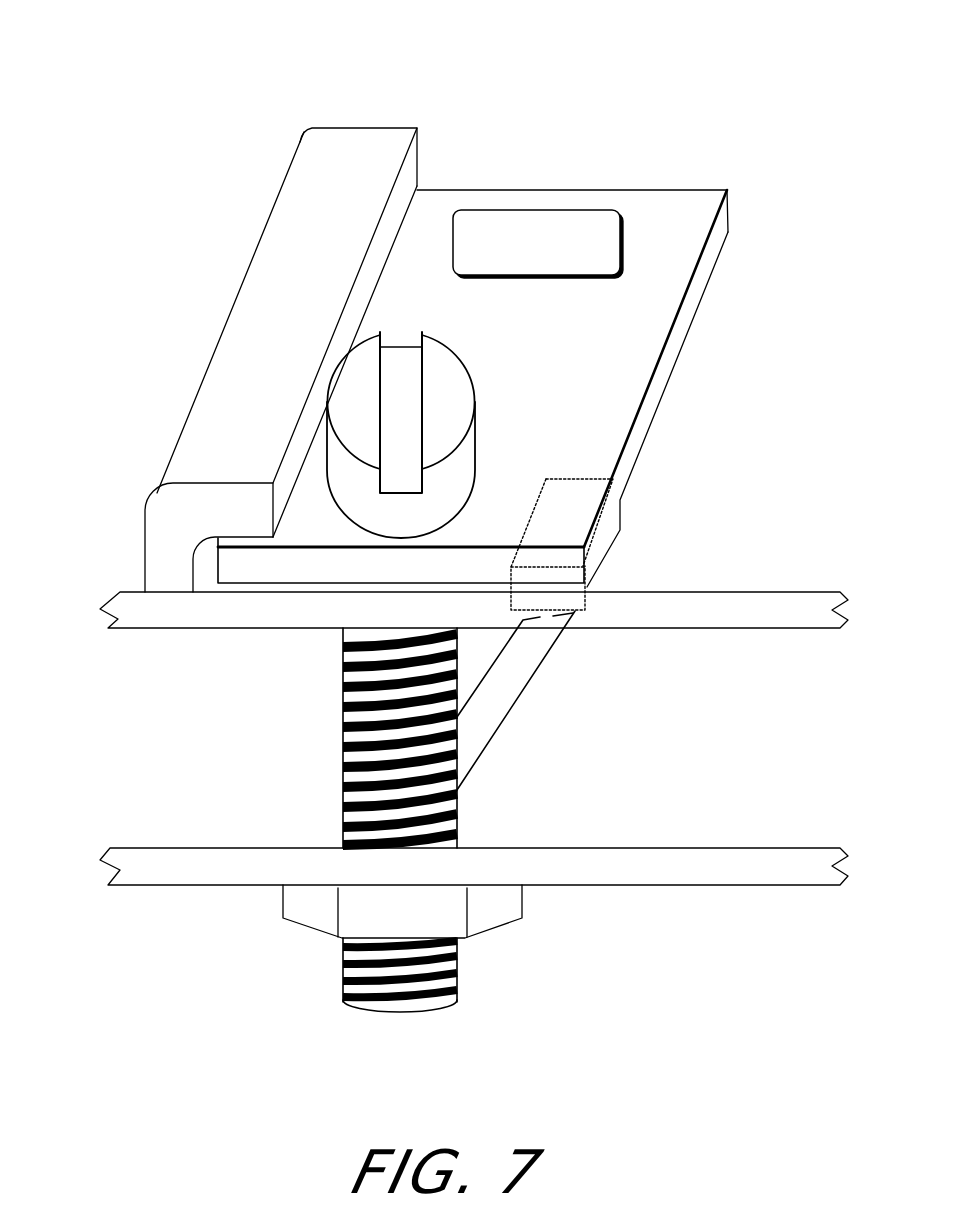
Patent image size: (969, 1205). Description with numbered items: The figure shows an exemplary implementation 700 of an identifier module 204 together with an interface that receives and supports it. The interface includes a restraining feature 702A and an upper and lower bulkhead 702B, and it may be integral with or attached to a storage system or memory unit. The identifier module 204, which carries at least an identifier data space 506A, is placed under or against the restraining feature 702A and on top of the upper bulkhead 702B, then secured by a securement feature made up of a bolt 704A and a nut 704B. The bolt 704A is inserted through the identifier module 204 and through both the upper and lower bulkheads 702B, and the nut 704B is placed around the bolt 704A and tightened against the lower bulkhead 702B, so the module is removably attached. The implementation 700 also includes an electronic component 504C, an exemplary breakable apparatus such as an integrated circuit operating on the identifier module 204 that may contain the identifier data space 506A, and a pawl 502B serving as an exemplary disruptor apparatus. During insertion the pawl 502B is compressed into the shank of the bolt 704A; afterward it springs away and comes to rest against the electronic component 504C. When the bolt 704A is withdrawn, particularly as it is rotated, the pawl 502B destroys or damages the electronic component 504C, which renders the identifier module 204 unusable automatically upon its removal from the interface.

The implementation 700 is at (214, 58).
The restraining feature 702A is at (290, 228).
The bolt 704A is at (355, 393).
The identifier data space 506A is at (465, 228).
The identifier module 204 is at (692, 212).
The electronic component 504C is at (613, 533).
The pawl 502B is at (530, 678).
The upper and lower bulkhead 702B is at (145, 620).
The nut 704B is at (293, 910).